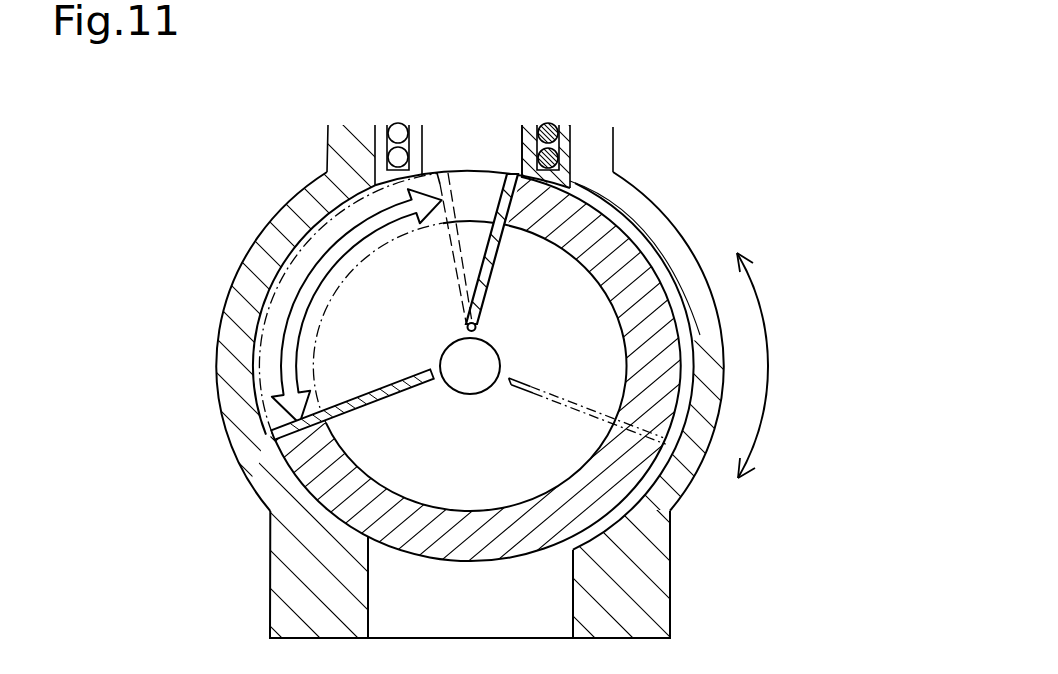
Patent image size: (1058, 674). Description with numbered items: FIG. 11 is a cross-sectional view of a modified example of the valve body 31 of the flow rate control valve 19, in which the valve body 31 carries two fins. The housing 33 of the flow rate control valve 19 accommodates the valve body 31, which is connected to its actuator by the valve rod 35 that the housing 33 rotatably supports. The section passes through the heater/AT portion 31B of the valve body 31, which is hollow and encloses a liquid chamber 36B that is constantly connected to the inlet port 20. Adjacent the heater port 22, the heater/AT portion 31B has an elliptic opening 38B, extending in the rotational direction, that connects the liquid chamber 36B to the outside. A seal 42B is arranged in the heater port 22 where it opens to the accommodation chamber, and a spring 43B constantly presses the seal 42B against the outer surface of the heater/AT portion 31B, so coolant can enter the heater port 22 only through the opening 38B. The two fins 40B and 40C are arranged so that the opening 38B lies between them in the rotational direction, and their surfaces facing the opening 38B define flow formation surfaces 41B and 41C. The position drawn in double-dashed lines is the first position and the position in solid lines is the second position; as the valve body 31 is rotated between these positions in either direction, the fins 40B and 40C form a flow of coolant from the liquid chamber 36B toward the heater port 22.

The flow rate control valve 19 is at (173, 210).
The inlet port 20 is at (470, 628).
The heater port 22 is at (509, 136).
The heater/AT portion 31B is at (470, 561).
The valve body 31 is at (476, 366).
The housing 33 is at (232, 419).
The valve rod 35 is at (500, 363).
The liquid chamber 36B is at (378, 325).
The opening 38B is at (300, 272).
The fin 40B is at (421, 383).
The fin 40C is at (484, 296).
The flow formation surface 41B is at (357, 397).
The flow formation surface 41C is at (480, 273).
The seal 42B is at (398, 122).
The spring 43B is at (423, 143).